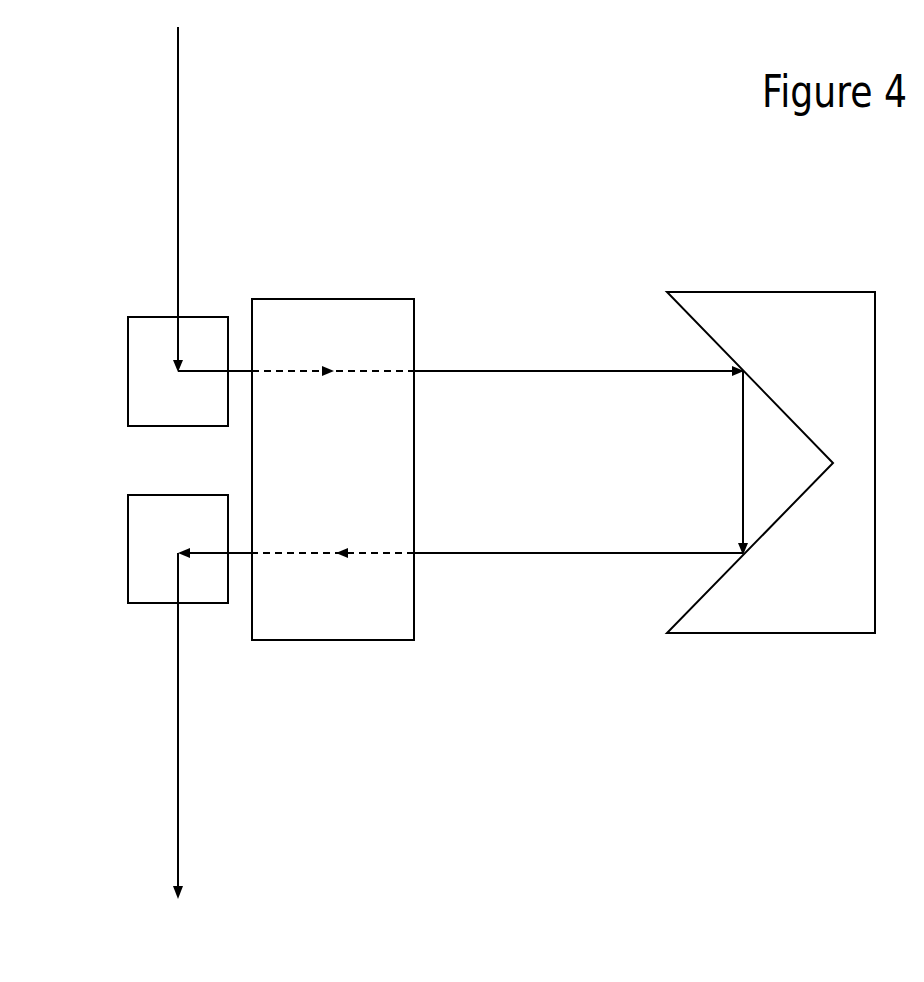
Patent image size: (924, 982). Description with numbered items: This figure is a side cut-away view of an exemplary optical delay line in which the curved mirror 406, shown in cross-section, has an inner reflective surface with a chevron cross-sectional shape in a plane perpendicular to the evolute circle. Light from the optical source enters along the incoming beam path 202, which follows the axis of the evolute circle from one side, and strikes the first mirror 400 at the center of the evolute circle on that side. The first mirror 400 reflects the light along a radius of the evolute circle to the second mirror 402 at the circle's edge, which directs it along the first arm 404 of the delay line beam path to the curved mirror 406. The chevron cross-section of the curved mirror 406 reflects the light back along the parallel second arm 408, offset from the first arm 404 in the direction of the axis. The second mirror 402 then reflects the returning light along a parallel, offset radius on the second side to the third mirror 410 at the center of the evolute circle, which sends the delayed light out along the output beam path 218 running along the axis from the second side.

The incoming beam path 202 is at (176, 158).
The first mirror 400 is at (127, 368).
The third mirror 410 is at (127, 525).
The second mirror 402 is at (340, 298).
The first arm 404 is at (551, 370).
The curved mirror 406 is at (775, 633).
The second arm 408 is at (567, 553).
The output beam path 218 is at (175, 773).